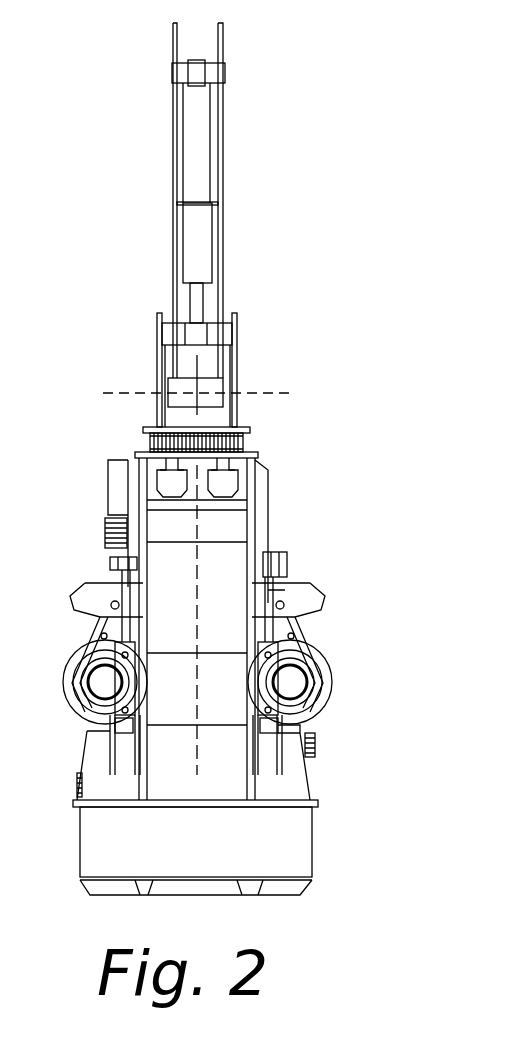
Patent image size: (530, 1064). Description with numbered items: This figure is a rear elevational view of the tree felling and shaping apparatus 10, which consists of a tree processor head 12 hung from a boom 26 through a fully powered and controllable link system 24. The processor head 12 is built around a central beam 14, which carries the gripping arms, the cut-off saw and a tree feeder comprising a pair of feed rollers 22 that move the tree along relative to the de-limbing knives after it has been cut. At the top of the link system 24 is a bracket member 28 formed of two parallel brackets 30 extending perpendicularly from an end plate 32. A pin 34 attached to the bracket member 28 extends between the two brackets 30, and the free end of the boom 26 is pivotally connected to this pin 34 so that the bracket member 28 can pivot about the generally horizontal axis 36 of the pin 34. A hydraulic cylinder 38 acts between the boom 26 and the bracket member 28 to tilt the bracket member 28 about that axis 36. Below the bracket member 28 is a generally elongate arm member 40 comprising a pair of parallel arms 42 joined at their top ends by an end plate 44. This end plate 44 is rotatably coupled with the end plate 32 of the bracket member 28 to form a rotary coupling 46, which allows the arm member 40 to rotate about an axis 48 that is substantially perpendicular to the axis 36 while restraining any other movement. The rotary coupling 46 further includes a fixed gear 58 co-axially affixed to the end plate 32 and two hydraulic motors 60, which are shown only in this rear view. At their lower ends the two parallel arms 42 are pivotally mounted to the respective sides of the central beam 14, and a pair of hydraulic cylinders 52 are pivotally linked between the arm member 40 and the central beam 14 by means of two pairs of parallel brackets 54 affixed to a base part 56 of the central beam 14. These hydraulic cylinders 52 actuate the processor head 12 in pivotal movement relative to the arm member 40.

The tree felling and shaping apparatus 10 is at (312, 338).
The tree processor head 12 is at (366, 573).
The central beam 14 is at (183, 765).
The feed rollers 22 is at (63, 688).
The link system 24 is at (133, 423).
The boom 26 is at (173, 158).
The bracket member 28 is at (155, 362).
The parallel brackets 30 is at (156, 332).
The end plate 32 is at (255, 422).
The pin 34 is at (240, 378).
The axis 36 is at (278, 396).
The hydraulic cylinder 38 is at (200, 243).
The arm member 40 is at (282, 520).
The parallel arms 42 is at (135, 590).
The end plate 44 is at (150, 452).
The rotary coupling 46 is at (134, 431).
The axis 48 is at (200, 573).
The hydraulic cylinders 52 is at (124, 688).
The parallel brackets 54 is at (108, 752).
The base part 56 is at (290, 795).
The fixed gear 58 is at (258, 452).
The hydraulic motors 60 is at (172, 482).